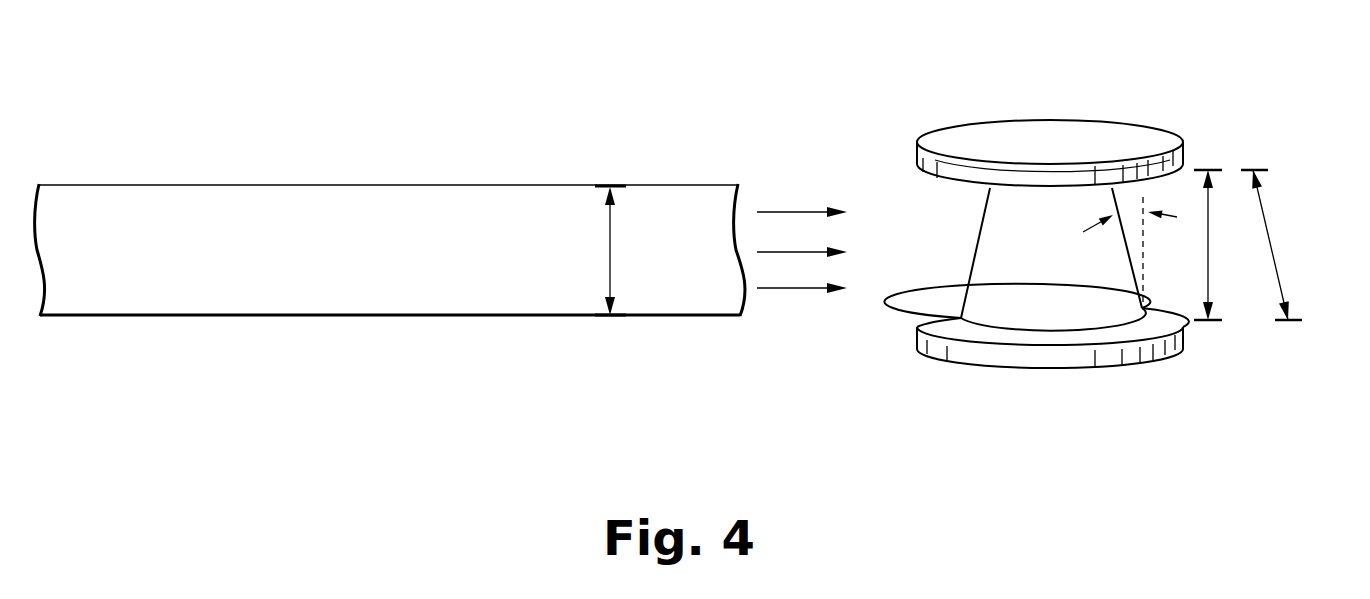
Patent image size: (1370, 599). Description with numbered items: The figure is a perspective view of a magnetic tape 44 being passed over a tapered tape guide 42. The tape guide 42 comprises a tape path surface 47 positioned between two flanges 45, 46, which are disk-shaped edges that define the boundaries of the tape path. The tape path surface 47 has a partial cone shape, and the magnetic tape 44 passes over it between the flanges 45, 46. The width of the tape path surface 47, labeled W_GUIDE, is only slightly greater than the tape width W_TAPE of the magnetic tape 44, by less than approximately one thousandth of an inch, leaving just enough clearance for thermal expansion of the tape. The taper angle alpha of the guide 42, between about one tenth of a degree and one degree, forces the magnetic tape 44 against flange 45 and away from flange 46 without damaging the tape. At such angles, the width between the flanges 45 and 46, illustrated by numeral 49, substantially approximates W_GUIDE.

The tape guide 42 is at (1064, 130).
The magnetic tape 44 is at (476, 300).
The flange 45 is at (917, 163).
The flange 46 is at (960, 353).
The tape path surface 47 is at (956, 257).
The width between flanges 49 is at (1208, 273).